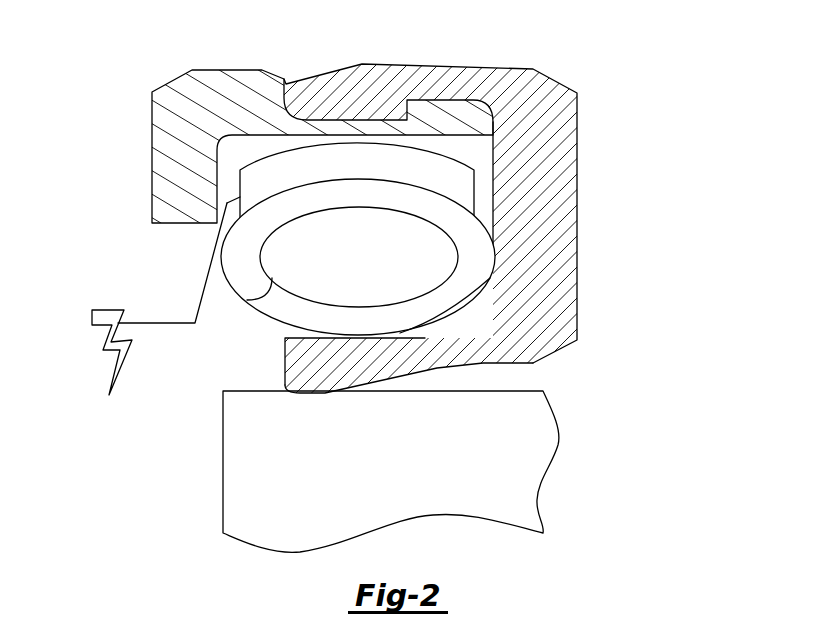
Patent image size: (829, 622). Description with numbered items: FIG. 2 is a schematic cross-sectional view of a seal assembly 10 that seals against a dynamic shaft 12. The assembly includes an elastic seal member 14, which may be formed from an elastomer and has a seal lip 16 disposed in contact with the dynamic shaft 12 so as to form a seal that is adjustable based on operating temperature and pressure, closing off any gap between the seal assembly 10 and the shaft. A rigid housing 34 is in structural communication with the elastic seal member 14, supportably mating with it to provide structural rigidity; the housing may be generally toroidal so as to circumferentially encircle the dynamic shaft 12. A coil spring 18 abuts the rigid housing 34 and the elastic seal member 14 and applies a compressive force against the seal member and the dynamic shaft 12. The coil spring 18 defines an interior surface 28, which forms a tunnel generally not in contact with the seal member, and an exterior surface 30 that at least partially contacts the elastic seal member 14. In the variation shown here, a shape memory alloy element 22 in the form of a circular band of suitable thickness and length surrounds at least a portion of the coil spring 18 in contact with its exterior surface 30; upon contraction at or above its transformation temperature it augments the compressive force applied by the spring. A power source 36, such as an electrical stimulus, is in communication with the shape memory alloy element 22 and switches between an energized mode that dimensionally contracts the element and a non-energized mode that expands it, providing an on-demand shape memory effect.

The seal assembly 10 is at (627, 80).
The dynamic shaft 12 is at (223, 462).
The elastic seal member 14 is at (577, 212).
The seal lip 16 is at (325, 394).
The coil spring 18 is at (370, 331).
The shape memory alloy element 22 is at (436, 157).
The interior surface 28 is at (433, 262).
The exterior surface 30 is at (221, 293).
The rigid housing 34 is at (152, 152).
The power source 36 is at (100, 332).